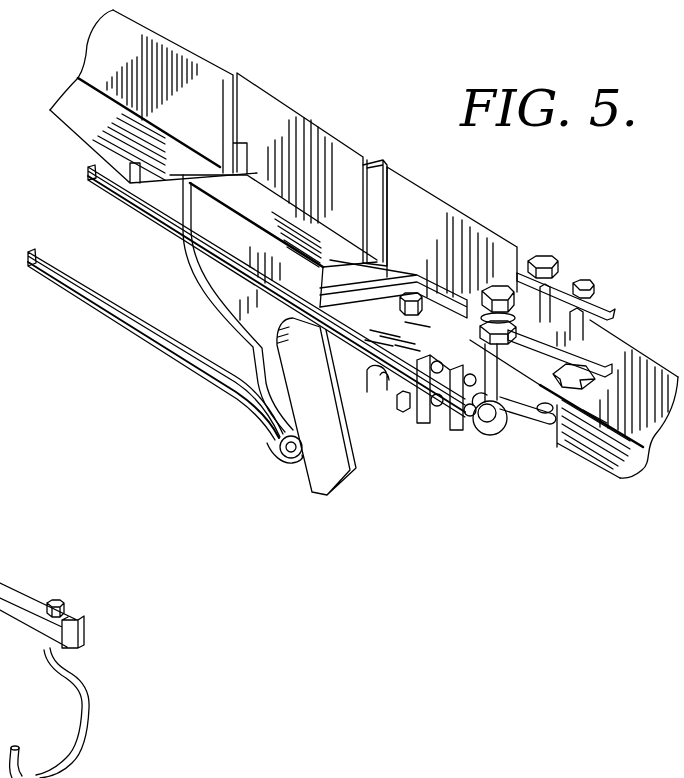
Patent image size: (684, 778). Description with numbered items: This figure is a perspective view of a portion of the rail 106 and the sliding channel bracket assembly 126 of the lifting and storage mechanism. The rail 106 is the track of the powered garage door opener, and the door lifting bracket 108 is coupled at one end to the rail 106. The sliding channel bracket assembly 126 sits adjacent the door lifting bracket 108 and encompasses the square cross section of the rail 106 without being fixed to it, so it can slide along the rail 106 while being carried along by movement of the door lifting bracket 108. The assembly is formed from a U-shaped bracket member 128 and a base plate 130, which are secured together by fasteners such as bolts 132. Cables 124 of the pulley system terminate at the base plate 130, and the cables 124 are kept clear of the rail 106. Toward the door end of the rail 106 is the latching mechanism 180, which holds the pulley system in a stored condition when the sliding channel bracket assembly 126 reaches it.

The rail 106 is at (199, 80).
The door lifting bracket 108 is at (278, 108).
The cable 124 is at (128, 205).
The sliding channel bracket assembly 126 is at (499, 231).
The U-shaped bracket member 128 is at (422, 203).
The base plate 130 is at (368, 370).
The bolt 132 is at (271, 448).
The latching mechanism 180 is at (620, 299).